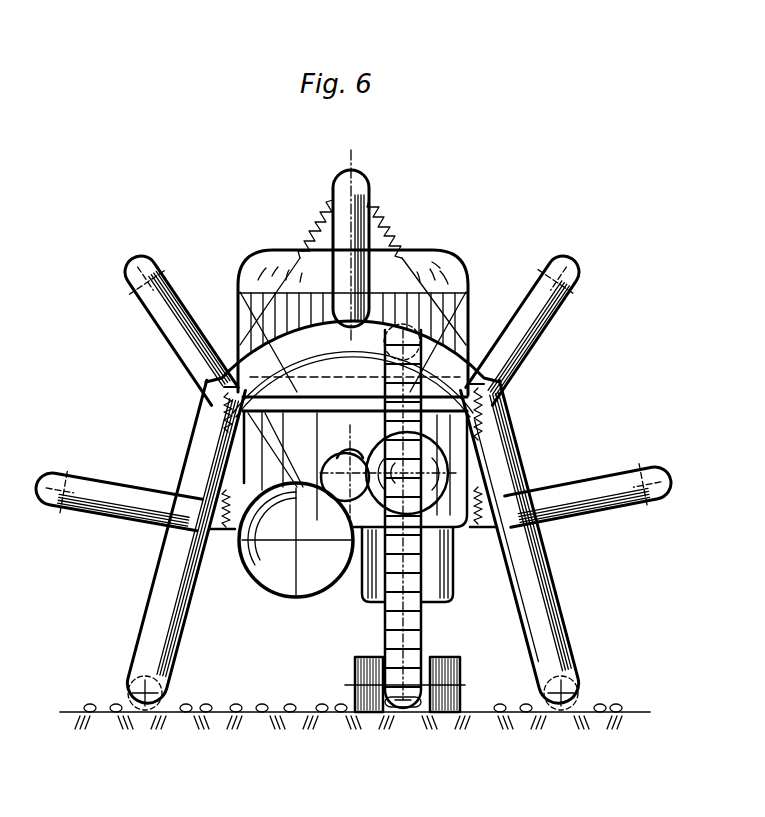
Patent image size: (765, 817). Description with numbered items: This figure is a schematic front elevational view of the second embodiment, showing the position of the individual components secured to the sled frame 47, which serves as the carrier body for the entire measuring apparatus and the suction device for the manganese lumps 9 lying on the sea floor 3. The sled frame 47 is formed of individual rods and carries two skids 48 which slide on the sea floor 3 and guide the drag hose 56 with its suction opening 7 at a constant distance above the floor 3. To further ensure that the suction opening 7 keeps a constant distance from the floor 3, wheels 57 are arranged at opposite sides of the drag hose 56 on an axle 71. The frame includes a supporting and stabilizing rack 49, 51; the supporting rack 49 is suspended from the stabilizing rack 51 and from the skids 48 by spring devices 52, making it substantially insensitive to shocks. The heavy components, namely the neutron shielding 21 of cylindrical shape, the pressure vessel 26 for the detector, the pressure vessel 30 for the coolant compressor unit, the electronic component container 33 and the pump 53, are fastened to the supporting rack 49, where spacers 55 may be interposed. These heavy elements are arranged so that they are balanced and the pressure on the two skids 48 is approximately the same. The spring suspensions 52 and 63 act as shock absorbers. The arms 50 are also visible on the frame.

The sea floor 3 is at (213, 725).
The suction opening 7 is at (407, 720).
The manganese lumps 9 is at (290, 710).
The neutron shielding 21 is at (457, 278).
The pressure vessel 26 is at (297, 541).
The pressure vessel 30 is at (440, 460).
The electronic component container 33 is at (307, 592).
The sled frame 47 is at (183, 455).
The skids 48 is at (133, 695).
The supporting rack 49 is at (240, 280).
The upper arm 50 is at (137, 258).
The stabilizing rack 51 is at (349, 170).
The spring devices 52 is at (318, 218).
The pump 53 is at (447, 574).
The spacers 55 is at (272, 528).
The drag hose 56 is at (420, 638).
The wheels 57 is at (462, 665).
The spring suspensions 63 is at (220, 412).
The axle 71 is at (463, 685).